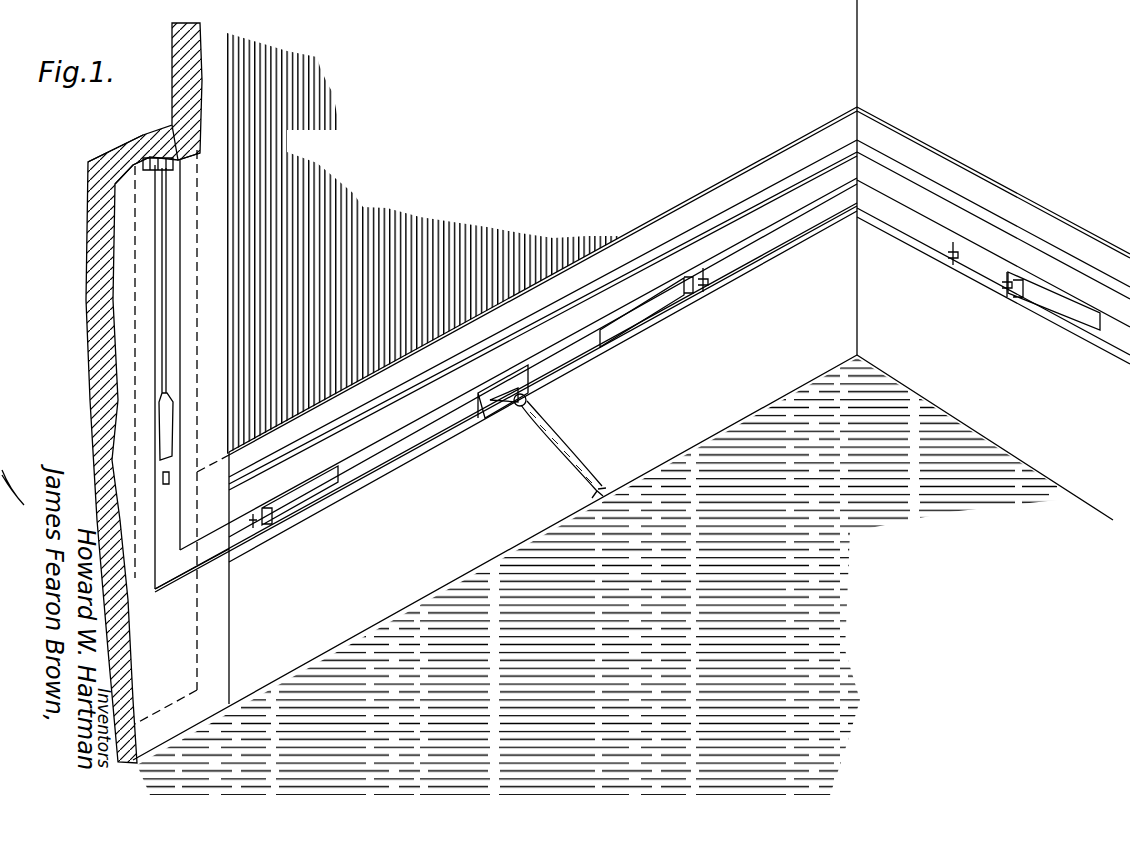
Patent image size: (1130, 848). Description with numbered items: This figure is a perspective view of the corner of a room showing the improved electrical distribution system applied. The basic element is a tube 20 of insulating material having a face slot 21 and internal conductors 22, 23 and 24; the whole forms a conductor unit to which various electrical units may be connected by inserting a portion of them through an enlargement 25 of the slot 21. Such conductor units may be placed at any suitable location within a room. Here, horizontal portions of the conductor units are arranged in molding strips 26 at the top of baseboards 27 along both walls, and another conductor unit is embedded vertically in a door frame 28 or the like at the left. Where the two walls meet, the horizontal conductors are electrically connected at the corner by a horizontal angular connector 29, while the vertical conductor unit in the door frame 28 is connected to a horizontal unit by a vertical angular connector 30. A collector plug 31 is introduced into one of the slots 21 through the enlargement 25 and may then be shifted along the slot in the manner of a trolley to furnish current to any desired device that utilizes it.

The tube of insulating material 20 is at (150, 157).
The face slot 21 is at (165, 240).
The internal conductor 22 is at (108, 168).
The internal conductor 23 is at (125, 147).
The internal conductor 24 is at (162, 142).
The enlargement of the slot 25 is at (163, 410).
The molding strip 26 is at (636, 245).
The baseboard 27 is at (786, 373).
The door frame 28 is at (110, 290).
The horizontal angular connector 29 is at (800, 228).
The vertical angular connector 30 is at (180, 574).
The collector plug 31 is at (500, 392).